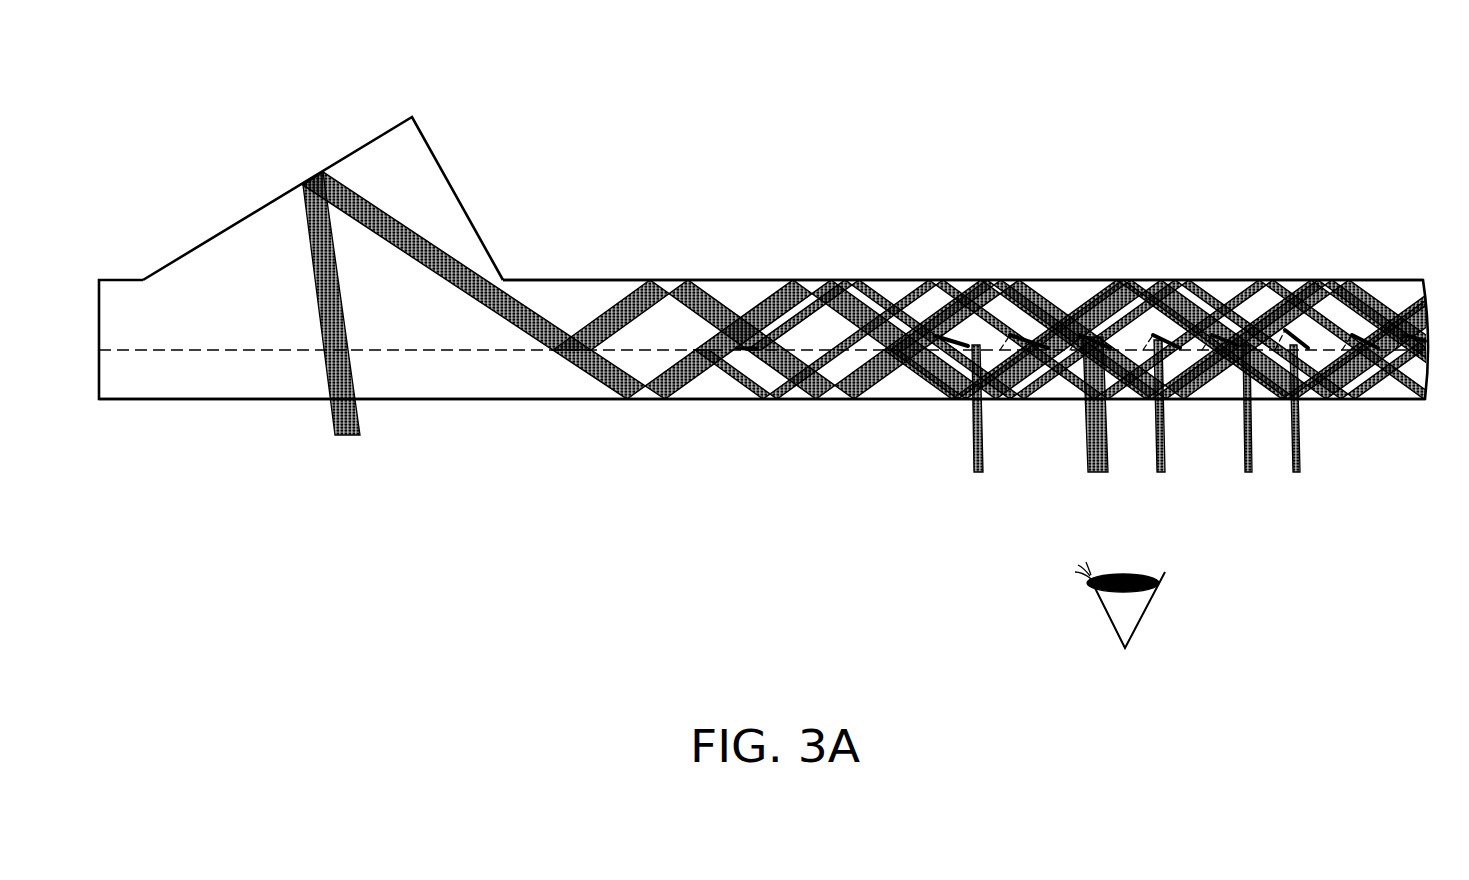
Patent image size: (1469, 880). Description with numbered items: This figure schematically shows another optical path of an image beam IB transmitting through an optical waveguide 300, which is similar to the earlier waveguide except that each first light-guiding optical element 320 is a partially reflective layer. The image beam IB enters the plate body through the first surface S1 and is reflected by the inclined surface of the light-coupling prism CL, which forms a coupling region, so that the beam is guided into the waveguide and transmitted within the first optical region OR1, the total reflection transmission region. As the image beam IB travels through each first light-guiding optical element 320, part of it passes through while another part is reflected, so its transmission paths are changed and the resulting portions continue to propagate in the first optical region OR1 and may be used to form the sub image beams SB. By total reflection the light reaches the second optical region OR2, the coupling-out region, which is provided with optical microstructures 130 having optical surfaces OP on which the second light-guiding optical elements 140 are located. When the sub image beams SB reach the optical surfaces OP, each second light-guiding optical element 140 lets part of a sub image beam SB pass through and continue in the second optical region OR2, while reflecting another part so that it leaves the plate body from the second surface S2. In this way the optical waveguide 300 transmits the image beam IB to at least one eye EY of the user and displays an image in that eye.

The optical waveguide 300 is at (1410, 573).
The first light-guiding optical element 320 is at (695, 348).
The optical microstructure 130 is at (1210, 326).
The second light-guiding optical element 140 is at (1240, 340).
The optical surface OP is at (1285, 335).
The first surface S1 is at (1400, 276).
The second surface S2 is at (1402, 403).
The light-coupling prism CL is at (378, 152).
The image beam IB is at (362, 435).
The sub image beam SB is at (978, 465).
The eye EY is at (1150, 607).
The first optical region OR1 is at (870, 55).
The second optical region OR2 is at (1420, 58).